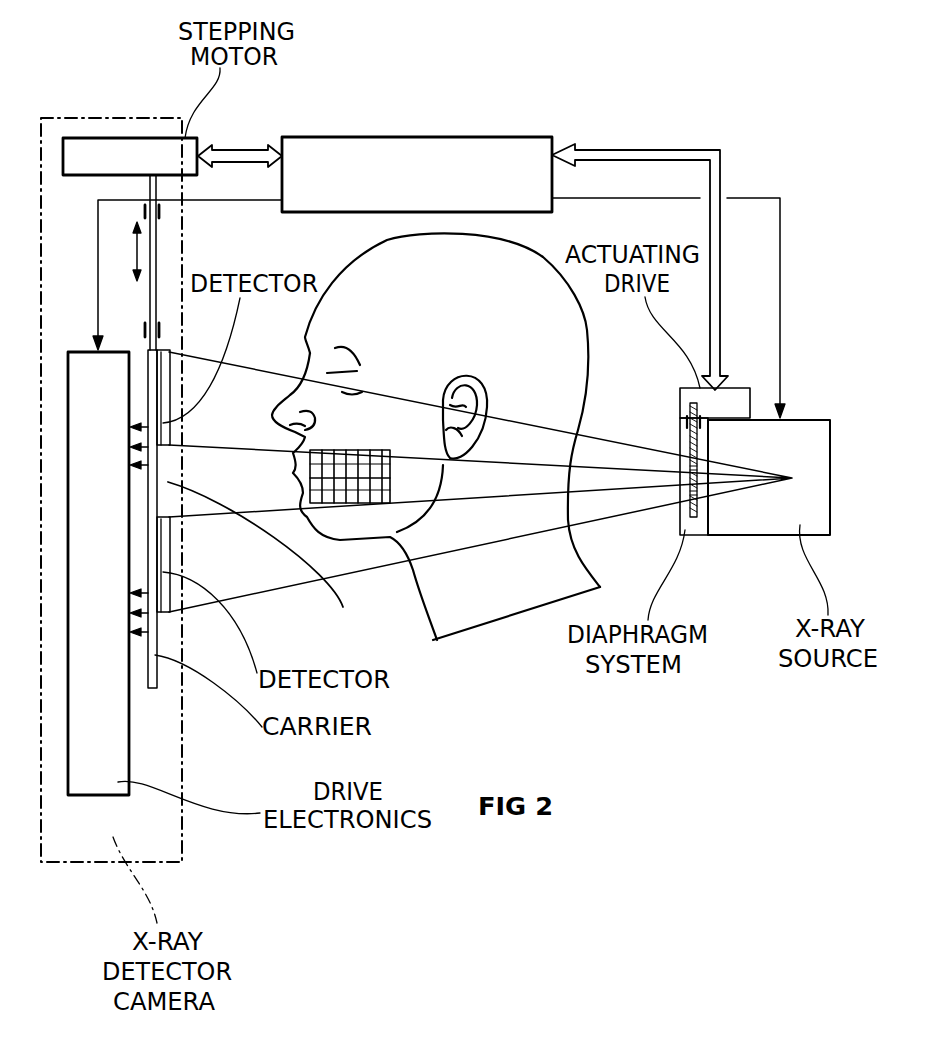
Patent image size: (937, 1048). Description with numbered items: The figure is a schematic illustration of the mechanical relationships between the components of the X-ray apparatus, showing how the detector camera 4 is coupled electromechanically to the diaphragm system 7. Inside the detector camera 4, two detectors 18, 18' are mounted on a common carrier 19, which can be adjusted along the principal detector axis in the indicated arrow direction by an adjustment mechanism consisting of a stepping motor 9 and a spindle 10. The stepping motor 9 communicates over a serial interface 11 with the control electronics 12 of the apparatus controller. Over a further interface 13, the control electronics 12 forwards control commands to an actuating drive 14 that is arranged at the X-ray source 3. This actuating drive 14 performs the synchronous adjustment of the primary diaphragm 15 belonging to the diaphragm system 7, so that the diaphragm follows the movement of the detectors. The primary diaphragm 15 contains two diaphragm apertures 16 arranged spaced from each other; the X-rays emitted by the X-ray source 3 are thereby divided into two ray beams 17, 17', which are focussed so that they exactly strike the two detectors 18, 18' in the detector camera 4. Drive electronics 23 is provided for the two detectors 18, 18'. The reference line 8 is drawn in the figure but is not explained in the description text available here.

The X-ray source 3 is at (768, 535).
The detector camera 4 is at (183, 835).
The diaphragm system 7 is at (689, 535).
The central ray / beam axis 8 is at (357, 633).
The stepping motor 9 is at (137, 138).
The spindle 10 is at (152, 250).
The serial interface 11 is at (255, 147).
The control electronics 12 is at (430, 137).
The further interface 13 is at (652, 149).
The actuating drive 14 is at (738, 388).
The primary diaphragm 15 is at (690, 437).
The diaphragm apertures 16 is at (693, 494).
The ray beam 17 is at (218, 378).
The ray beam 17' is at (224, 583).
The detector 18 is at (196, 376).
The detector 18' is at (200, 584).
The carrier 19 is at (153, 690).
The drive electronics 23 is at (130, 770).